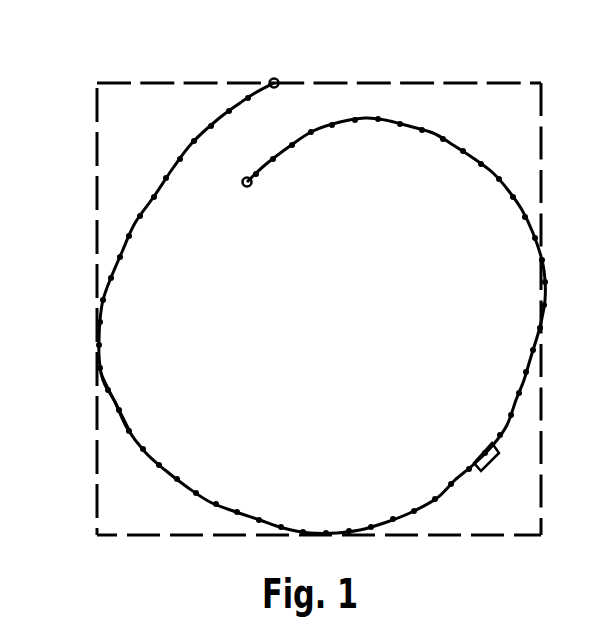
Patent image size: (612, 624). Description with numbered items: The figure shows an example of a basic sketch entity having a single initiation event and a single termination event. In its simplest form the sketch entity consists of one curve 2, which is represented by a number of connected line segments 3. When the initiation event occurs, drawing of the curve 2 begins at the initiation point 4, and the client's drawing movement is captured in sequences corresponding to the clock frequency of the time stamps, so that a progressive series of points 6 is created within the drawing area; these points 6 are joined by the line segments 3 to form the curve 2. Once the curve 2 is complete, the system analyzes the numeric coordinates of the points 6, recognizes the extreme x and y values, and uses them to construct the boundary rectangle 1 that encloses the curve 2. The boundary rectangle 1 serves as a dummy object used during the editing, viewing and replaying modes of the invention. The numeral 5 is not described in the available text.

The boundary rectangle 1 is at (542, 98).
The curve 2 is at (535, 333).
The line segments 3 is at (492, 457).
The initiation point 4 is at (271, 80).
The start point of path 5 is at (243, 182).
The points 6 is at (114, 402).